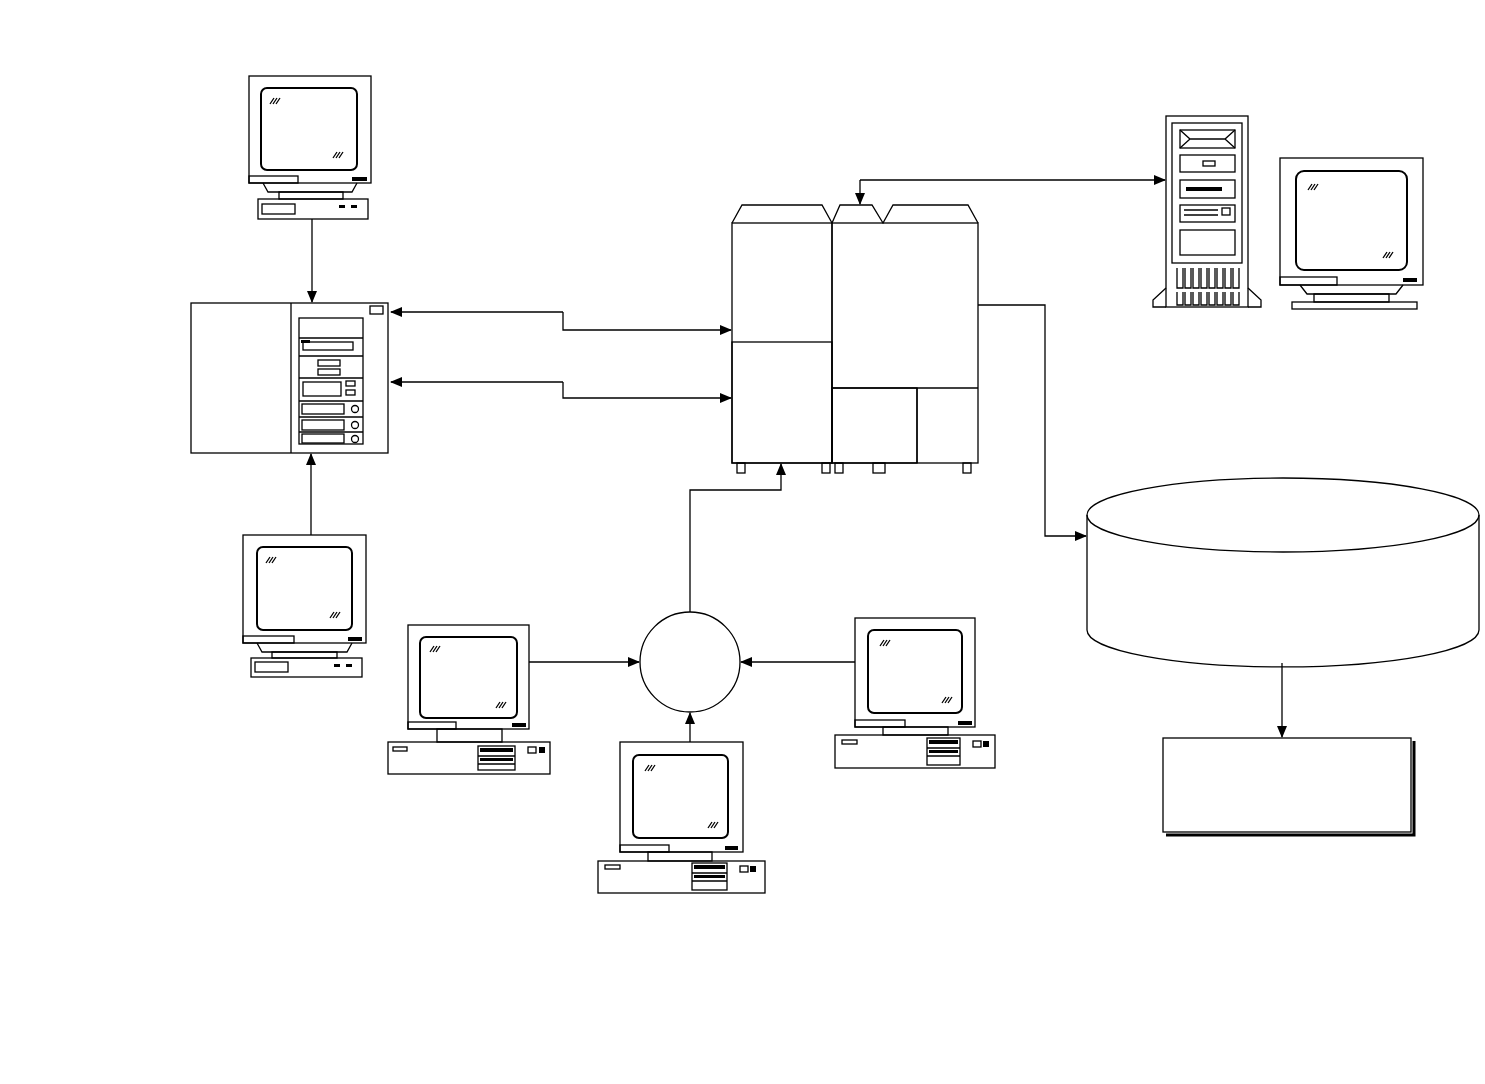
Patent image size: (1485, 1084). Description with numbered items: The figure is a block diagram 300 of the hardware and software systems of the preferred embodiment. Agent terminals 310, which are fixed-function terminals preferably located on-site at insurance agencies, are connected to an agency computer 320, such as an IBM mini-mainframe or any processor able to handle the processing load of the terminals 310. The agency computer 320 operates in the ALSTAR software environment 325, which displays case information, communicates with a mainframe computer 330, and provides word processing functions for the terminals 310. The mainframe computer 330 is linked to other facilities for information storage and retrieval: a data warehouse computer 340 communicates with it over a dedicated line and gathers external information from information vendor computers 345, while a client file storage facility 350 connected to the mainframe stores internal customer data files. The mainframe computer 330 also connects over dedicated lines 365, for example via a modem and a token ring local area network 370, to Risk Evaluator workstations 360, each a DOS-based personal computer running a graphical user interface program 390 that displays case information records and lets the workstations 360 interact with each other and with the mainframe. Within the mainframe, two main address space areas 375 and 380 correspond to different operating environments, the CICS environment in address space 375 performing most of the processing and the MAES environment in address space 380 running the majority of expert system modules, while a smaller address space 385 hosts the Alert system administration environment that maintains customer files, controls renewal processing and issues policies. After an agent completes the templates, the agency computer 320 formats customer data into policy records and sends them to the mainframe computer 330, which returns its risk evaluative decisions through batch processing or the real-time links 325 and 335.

The block diagram 300 is at (473, 108).
The agent terminals 310 is at (165, 205).
The agency computer 320 is at (243, 578).
The ALSTAR software environment / real-time link 325 is at (561, 305).
The mainframe computer 330 is at (923, 167).
The real-time link 335 is at (561, 374).
The data warehouse computer 340 is at (1358, 478).
The information vendor computers 345 is at (1343, 738).
The client file storage facility 350 is at (1312, 158).
The Risk Evaluator workstations 360 is at (478, 625).
The dedicated lines 365 is at (690, 490).
The token ring local area network 370 is at (725, 623).
The address space (CICS environment) 375 is at (732, 262).
The address space (MAES environment) 380 is at (793, 453).
The address space (Alert environment) 385 is at (878, 453).
The graphical user interface program 390 is at (517, 688).